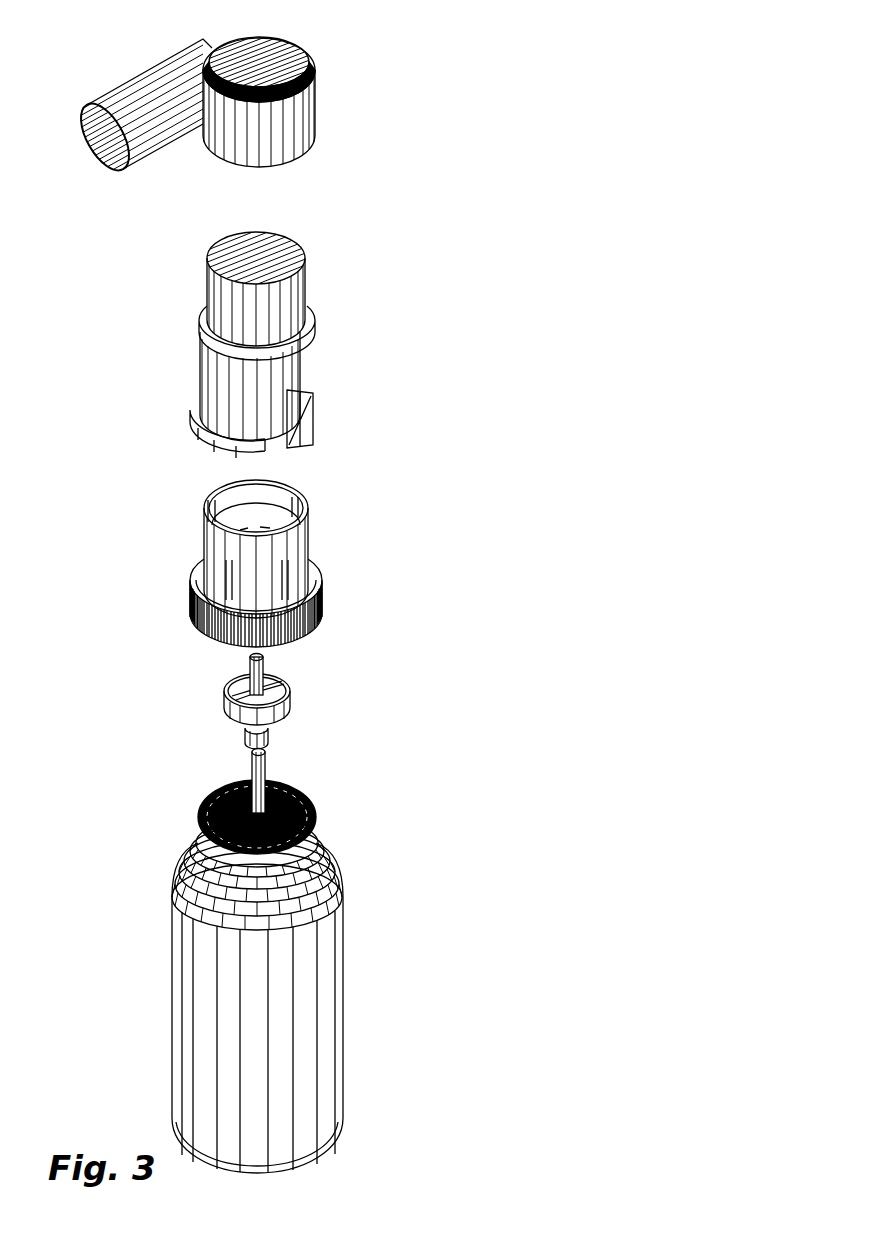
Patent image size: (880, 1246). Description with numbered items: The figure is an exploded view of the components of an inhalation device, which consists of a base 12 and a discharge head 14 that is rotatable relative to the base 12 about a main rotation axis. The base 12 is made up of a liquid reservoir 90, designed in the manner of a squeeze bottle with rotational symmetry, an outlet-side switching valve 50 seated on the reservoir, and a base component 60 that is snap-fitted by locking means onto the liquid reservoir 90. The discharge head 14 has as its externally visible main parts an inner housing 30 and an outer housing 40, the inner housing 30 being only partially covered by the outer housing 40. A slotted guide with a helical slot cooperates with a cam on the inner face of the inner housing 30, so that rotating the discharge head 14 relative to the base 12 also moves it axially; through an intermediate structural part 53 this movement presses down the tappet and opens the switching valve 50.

The base 12 is at (430, 481).
The discharge head 14 is at (427, 2).
The inner housing 30 is at (322, 320).
The outer housing 40 is at (322, 87).
The switching valve 50 is at (290, 791).
The intermediate structural part 53 is at (287, 712).
The base component 60 is at (316, 537).
The liquid reservoir 90 is at (310, 868).